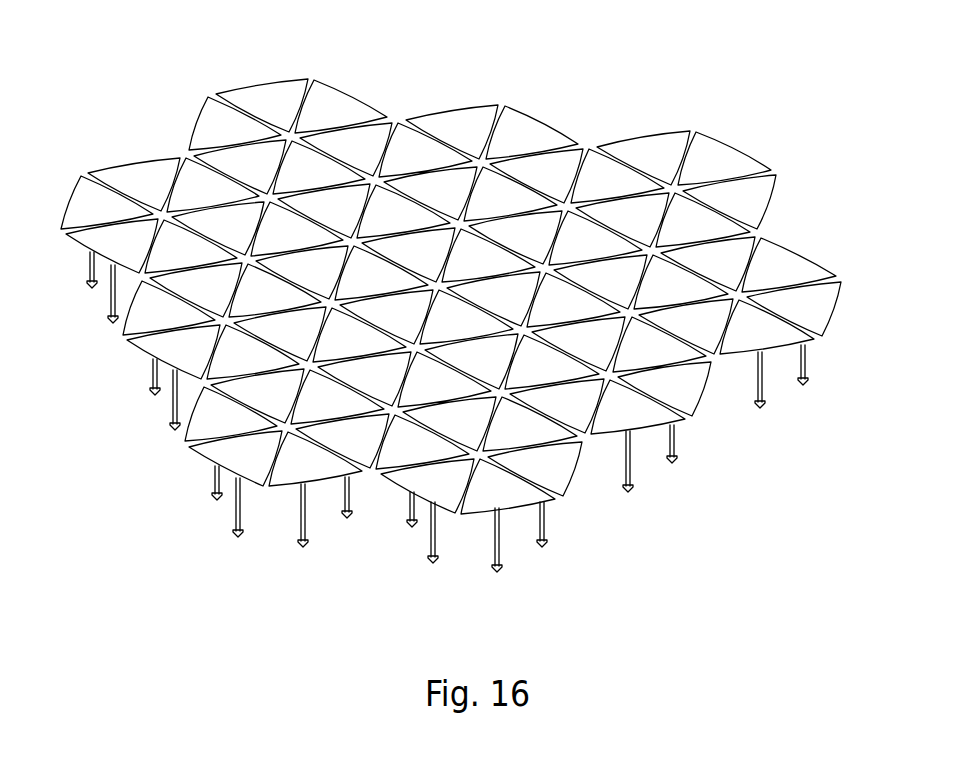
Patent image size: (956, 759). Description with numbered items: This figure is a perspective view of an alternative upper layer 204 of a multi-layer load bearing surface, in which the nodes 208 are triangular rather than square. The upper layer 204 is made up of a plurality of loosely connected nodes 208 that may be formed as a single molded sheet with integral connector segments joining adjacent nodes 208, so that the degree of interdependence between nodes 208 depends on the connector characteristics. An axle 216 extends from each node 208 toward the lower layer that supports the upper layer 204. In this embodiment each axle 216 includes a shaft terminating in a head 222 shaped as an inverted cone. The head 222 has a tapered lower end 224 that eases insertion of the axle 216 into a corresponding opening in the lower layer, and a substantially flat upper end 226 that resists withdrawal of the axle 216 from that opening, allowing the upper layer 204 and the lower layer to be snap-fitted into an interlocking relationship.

The upper layer 204 is at (438, 296).
The node 208 is at (786, 253).
The axle 216 is at (463, 412).
The head 222 is at (736, 430).
The tapered lower end 224 is at (670, 466).
The flat upper end 226 is at (675, 458).